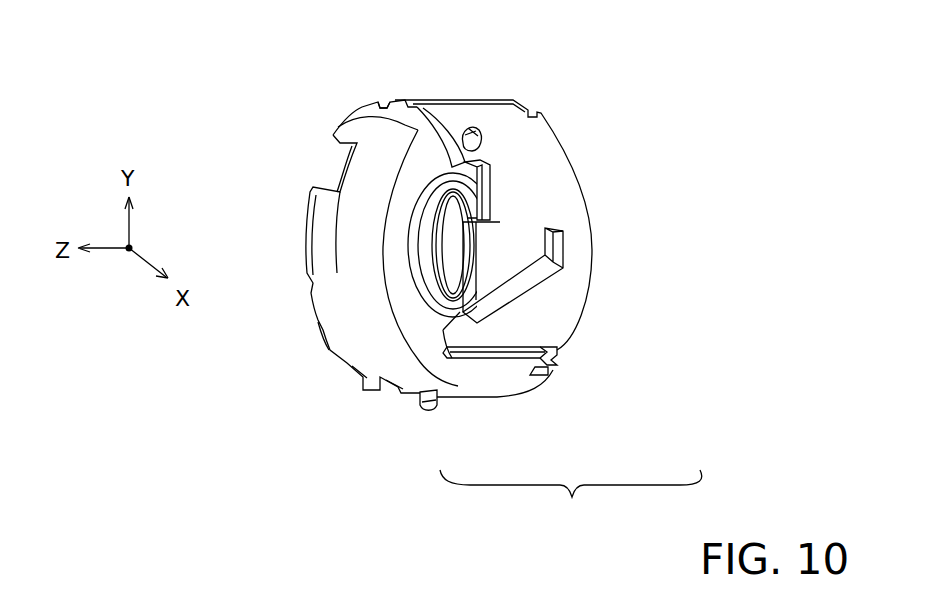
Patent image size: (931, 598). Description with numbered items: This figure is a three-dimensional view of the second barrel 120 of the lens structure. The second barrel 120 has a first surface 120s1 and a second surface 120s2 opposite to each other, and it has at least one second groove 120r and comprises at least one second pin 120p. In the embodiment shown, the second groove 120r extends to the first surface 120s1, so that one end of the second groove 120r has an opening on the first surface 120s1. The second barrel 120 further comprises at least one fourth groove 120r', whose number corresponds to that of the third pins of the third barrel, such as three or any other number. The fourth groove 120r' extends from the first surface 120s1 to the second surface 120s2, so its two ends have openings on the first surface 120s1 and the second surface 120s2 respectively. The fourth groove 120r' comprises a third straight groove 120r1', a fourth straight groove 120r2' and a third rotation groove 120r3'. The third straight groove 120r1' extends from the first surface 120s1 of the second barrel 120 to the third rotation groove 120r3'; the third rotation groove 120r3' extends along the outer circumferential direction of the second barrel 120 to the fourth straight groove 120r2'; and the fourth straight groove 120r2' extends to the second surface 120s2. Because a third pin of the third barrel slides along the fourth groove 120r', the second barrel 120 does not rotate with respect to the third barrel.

The second barrel 120 is at (688, 96).
The second groove 120r is at (482, 174).
The first surface 120s1 is at (410, 126).
The second pin 120p is at (463, 145).
The second surface 120s2 is at (604, 242).
The third straight groove 120r1' is at (492, 407).
The fourth straight groove 120r2' is at (572, 407).
The third rotation groove 120r3' is at (616, 407).
The fourth groove 120r' is at (571, 503).